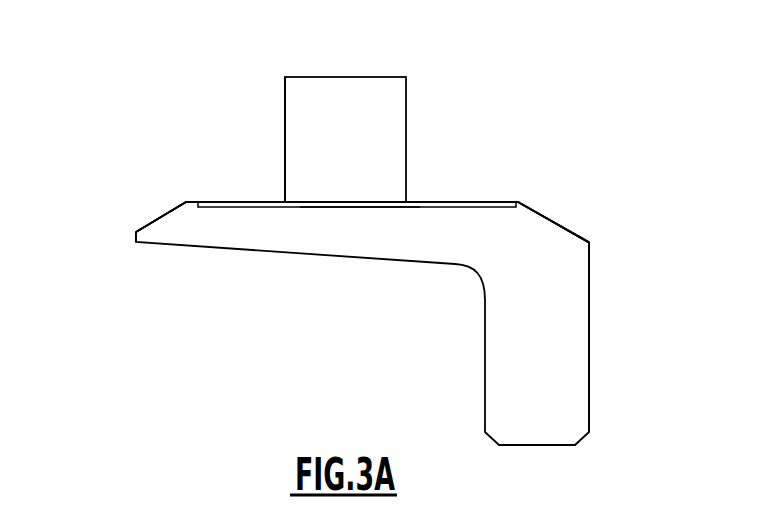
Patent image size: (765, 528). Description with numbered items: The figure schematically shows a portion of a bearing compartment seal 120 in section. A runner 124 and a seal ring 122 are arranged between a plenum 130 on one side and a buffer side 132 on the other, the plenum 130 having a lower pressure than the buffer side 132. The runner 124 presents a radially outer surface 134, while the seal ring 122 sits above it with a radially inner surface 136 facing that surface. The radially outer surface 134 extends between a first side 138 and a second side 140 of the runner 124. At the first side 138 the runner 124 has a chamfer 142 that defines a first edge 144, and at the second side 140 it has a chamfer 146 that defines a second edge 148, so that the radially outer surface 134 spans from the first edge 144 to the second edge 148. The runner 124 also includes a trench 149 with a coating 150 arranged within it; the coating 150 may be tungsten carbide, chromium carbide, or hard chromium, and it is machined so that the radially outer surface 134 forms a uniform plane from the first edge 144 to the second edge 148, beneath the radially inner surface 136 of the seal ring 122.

The bearing compartment seal 120 is at (119, 105).
The seal ring 122 is at (388, 102).
The runner 124 is at (545, 238).
The plenum 130 is at (211, 119).
The buffer side 132 is at (533, 129).
The radially outer surface 134 is at (252, 207).
The radially inner surface 136 is at (305, 202).
The first side 138 is at (134, 237).
The second side 140 is at (589, 256).
The chamfer 142 is at (155, 220).
The first edge 144 is at (186, 201).
The chamfer 146 is at (578, 233).
The second edge 148 is at (518, 201).
The trench 149 is at (362, 207).
The coating 150 is at (445, 202).